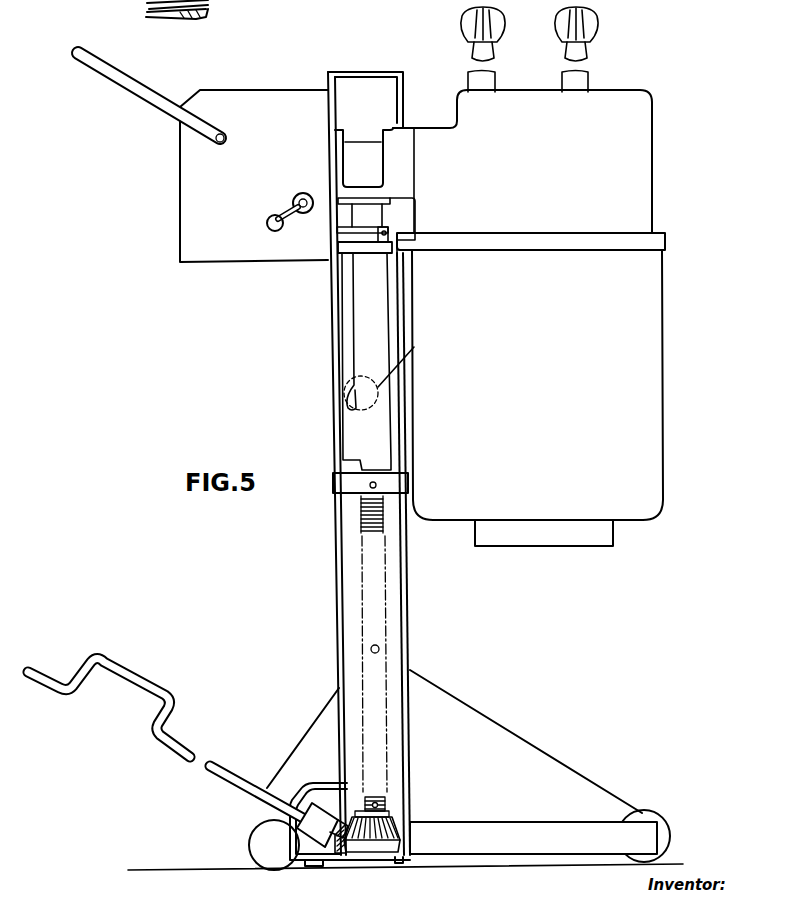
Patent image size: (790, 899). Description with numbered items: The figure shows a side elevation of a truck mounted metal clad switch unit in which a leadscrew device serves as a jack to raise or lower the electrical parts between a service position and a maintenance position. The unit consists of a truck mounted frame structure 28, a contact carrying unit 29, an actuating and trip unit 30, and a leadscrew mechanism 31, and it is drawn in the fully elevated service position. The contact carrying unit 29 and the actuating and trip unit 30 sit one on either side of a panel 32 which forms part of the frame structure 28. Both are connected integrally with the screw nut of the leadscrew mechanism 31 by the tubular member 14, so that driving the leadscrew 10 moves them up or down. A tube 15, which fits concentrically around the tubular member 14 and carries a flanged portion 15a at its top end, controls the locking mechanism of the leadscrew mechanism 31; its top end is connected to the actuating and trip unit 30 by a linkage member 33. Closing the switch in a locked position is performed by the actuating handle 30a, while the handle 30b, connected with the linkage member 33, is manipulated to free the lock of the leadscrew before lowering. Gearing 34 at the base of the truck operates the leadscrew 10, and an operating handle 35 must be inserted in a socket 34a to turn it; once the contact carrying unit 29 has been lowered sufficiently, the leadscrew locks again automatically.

The leadscrew 10 is at (362, 572).
The tubular member 14 is at (365, 208).
The tube 15 is at (353, 424).
The flanged portion 15a is at (355, 248).
The truck mounted frame structure 28 is at (340, 672).
The contact carrying unit 29 is at (526, 381).
The actuating and trip unit 30 is at (236, 190).
The actuating handle 30a is at (158, 108).
The handle 30b is at (289, 226).
The leadscrew mechanism 31 is at (331, 493).
The panel 32 is at (328, 82).
The linkage member 33 is at (368, 230).
The gearing 34 is at (360, 848).
The socket 34a is at (323, 835).
The operating handle 35 is at (137, 672).